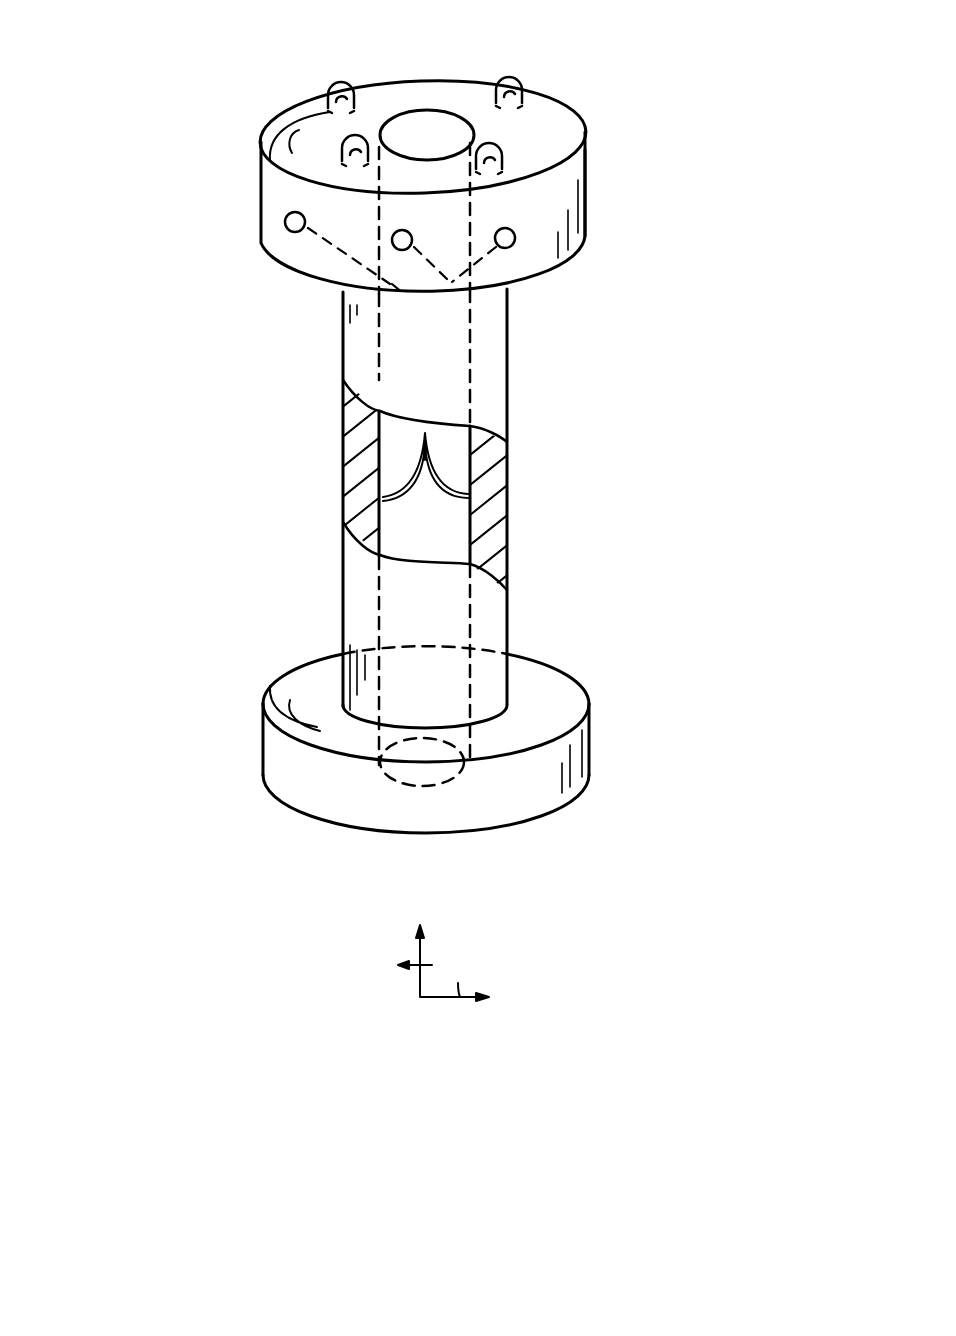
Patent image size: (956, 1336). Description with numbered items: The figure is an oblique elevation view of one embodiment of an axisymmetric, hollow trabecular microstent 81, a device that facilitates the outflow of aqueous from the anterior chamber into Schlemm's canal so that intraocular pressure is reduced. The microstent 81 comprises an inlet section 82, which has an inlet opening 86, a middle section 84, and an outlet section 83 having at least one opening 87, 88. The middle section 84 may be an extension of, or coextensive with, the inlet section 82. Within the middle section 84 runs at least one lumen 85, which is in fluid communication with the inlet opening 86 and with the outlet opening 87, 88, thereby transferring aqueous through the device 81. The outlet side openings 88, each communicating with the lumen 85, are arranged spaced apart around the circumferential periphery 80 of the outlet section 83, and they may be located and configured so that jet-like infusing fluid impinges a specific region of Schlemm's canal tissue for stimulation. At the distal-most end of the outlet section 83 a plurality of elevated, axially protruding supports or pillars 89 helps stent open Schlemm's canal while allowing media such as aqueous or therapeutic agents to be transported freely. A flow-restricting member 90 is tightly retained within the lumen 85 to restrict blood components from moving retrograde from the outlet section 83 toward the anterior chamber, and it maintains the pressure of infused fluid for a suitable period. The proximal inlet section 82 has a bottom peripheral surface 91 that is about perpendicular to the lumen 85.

The circumferential periphery 80 is at (589, 208).
The trabecular microstent 81 is at (617, 356).
The inlet section 82 is at (207, 697).
The outlet section 83 is at (222, 156).
The middle section 84 is at (227, 269).
The lumen 85 is at (442, 513).
The inlet opening 86 is at (455, 778).
The outlet opening 87 is at (417, 122).
The outlet side openings 88 is at (290, 213).
The pillars 89 is at (362, 134).
The flow-restricting member 90 is at (440, 462).
The bottom peripheral surface 91 is at (331, 825).